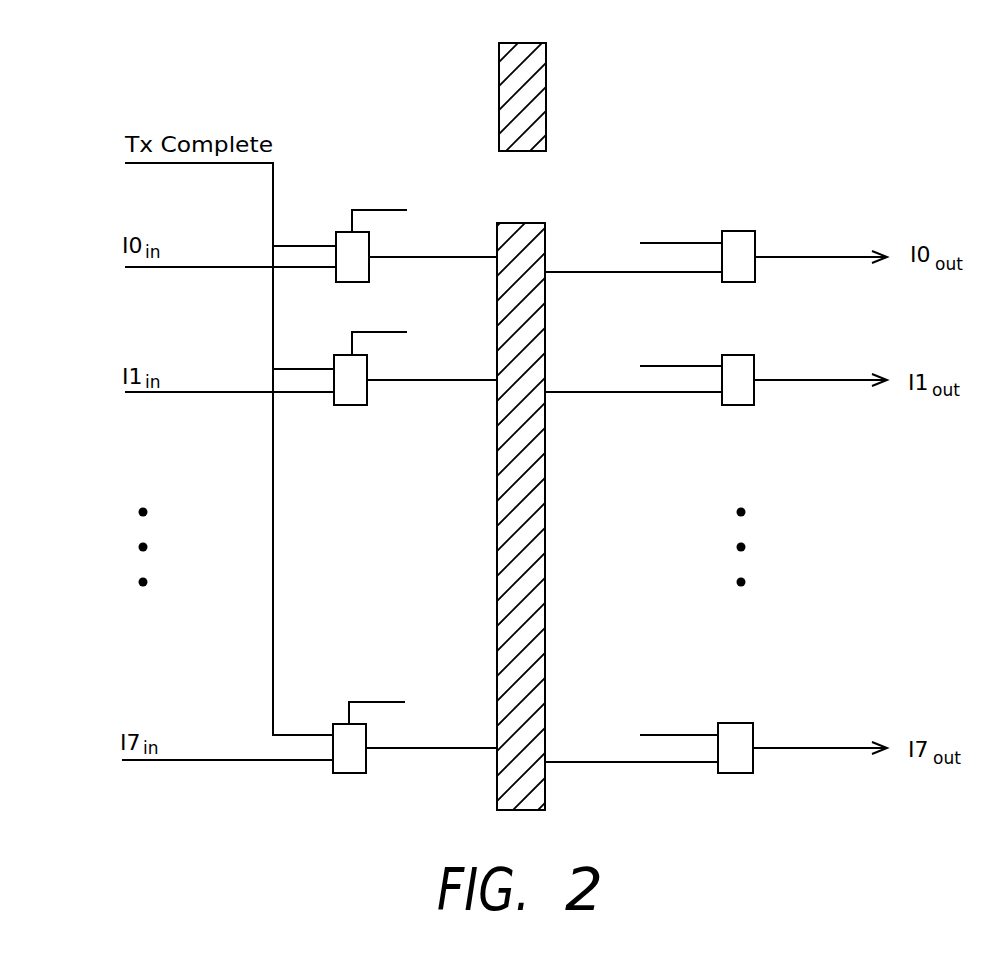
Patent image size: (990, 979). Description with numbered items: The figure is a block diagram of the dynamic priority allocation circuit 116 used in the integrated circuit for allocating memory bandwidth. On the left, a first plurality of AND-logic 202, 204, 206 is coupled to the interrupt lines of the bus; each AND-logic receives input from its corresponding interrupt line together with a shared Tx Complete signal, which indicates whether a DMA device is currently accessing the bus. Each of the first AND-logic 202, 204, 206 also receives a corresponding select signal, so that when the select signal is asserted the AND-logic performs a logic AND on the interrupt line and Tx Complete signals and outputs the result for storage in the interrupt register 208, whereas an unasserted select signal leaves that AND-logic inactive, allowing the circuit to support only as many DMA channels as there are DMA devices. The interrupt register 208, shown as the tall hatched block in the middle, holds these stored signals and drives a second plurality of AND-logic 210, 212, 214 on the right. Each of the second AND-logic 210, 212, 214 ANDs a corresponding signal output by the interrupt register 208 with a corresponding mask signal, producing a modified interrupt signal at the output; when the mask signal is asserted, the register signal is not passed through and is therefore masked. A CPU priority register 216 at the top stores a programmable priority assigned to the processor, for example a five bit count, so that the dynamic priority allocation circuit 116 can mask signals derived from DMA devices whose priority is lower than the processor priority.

The dynamic priority allocation circuit 116 is at (742, 95).
The AND-logic 202 is at (336, 232).
The AND-logic 204 is at (334, 355).
The AND-logic 206 is at (333, 724).
The interrupt register 208 is at (530, 223).
The AND-logic 210 is at (748, 231).
The AND-logic 212 is at (748, 355).
The AND-logic 214 is at (748, 723).
The CPU priority register 216 is at (544, 43).